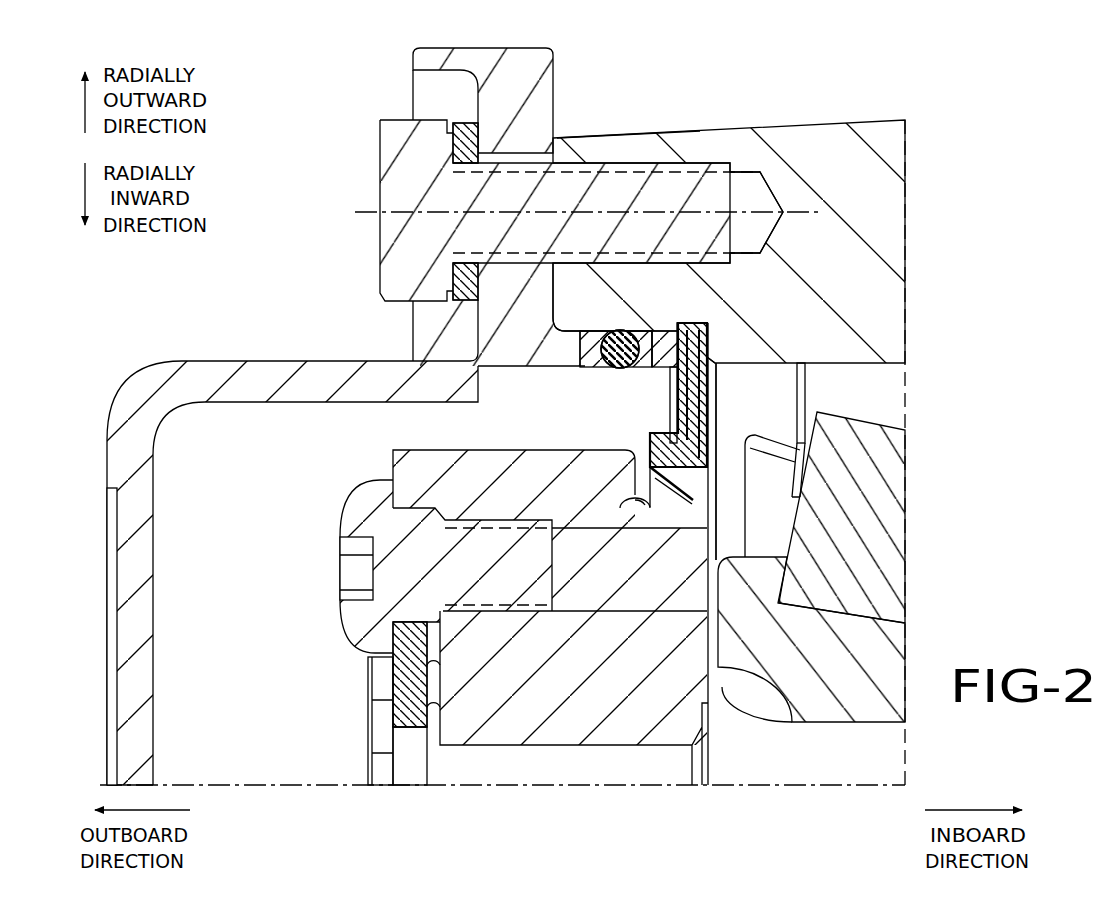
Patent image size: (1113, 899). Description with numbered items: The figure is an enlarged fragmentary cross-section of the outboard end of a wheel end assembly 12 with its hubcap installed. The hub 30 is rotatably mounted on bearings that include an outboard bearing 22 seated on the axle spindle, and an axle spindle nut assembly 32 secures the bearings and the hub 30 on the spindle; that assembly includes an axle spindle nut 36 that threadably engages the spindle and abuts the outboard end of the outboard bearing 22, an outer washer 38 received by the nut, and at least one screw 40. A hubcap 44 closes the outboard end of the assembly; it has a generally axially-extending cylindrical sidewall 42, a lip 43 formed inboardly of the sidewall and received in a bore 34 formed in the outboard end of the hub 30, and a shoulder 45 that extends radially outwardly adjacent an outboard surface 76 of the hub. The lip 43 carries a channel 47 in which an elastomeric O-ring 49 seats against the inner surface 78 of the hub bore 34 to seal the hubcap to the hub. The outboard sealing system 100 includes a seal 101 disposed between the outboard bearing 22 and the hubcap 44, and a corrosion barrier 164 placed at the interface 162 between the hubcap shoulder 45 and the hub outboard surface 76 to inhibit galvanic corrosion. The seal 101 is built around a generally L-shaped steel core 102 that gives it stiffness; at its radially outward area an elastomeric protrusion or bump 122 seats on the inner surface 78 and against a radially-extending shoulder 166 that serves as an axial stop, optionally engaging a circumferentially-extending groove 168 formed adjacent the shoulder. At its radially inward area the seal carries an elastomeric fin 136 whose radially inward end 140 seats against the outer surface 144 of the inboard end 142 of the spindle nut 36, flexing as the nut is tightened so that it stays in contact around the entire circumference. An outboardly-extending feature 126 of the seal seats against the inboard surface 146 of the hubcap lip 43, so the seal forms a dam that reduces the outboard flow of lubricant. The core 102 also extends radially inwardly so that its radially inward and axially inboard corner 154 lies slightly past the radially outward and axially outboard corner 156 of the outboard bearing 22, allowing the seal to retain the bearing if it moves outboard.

The wheel end assembly 12 is at (694, 118).
The outboard bearing 22 is at (851, 726).
The hub 30 is at (833, 118).
The axle spindle nut assembly 32 is at (366, 740).
The bore 34 is at (570, 350).
The axle spindle nut 36 is at (393, 465).
The outer washer 38 is at (393, 667).
The screw 40 is at (342, 626).
The cylindrical sidewall 42 is at (185, 390).
The lip 43 is at (670, 330).
The hubcap 44 is at (104, 434).
The shoulder 45 is at (490, 105).
The channel 47 is at (583, 368).
The O-ring 49 is at (630, 330).
The outboard surface 76 is at (556, 288).
The inner surface 78 is at (548, 335).
The outboard sealing system 100 is at (690, 430).
The seal 101 is at (722, 390).
The core 102 is at (734, 425).
The protrusion or bump 122 is at (705, 335).
The outboardly-extending feature 126 is at (615, 369).
The fin 136 is at (665, 500).
The radially inward end 140 is at (690, 505).
The inboard end 142 is at (720, 688).
The outer surface 144 is at (640, 470).
The inboard surface 146 is at (672, 396).
The corner 154 is at (814, 472).
The corner 156 is at (772, 453).
The interface 162 is at (558, 150).
The corrosion barrier 164 is at (590, 336).
The shoulder 166 is at (702, 352).
The groove 168 is at (712, 370).